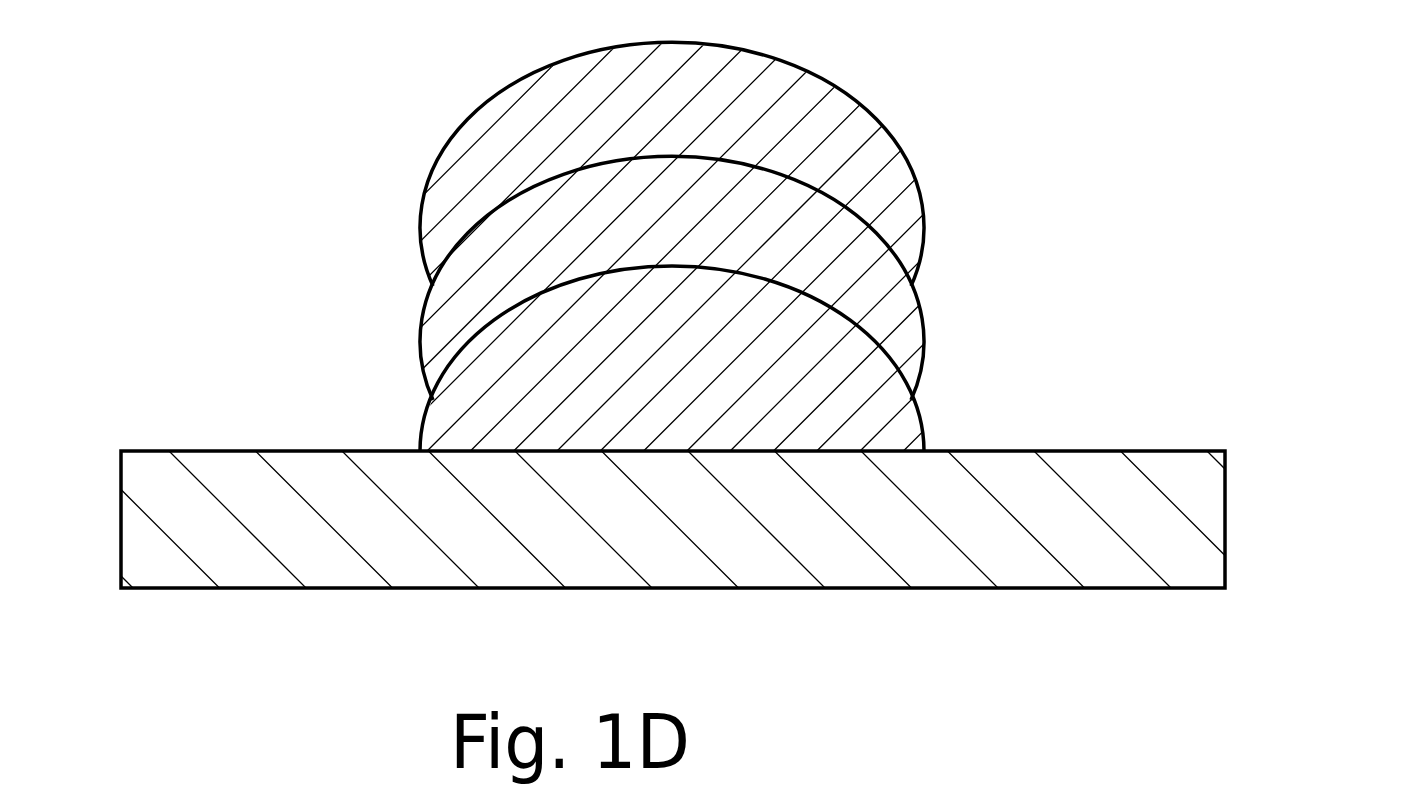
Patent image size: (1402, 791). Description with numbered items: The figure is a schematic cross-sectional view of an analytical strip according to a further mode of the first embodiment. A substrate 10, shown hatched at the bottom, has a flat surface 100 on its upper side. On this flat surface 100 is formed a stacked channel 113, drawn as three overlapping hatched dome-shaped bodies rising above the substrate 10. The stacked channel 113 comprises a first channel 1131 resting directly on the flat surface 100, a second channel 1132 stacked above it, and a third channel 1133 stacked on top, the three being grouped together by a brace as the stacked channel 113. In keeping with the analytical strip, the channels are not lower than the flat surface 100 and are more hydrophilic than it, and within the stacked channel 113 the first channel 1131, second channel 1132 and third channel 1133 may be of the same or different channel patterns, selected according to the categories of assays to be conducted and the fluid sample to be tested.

The substrate 10 is at (1210, 503).
The flat surface 100 is at (681, 314).
The stacked channel 113 is at (679, 245).
The first channel 1131 is at (870, 417).
The second channel 1132 is at (870, 302).
The third channel 1133 is at (781, 164).